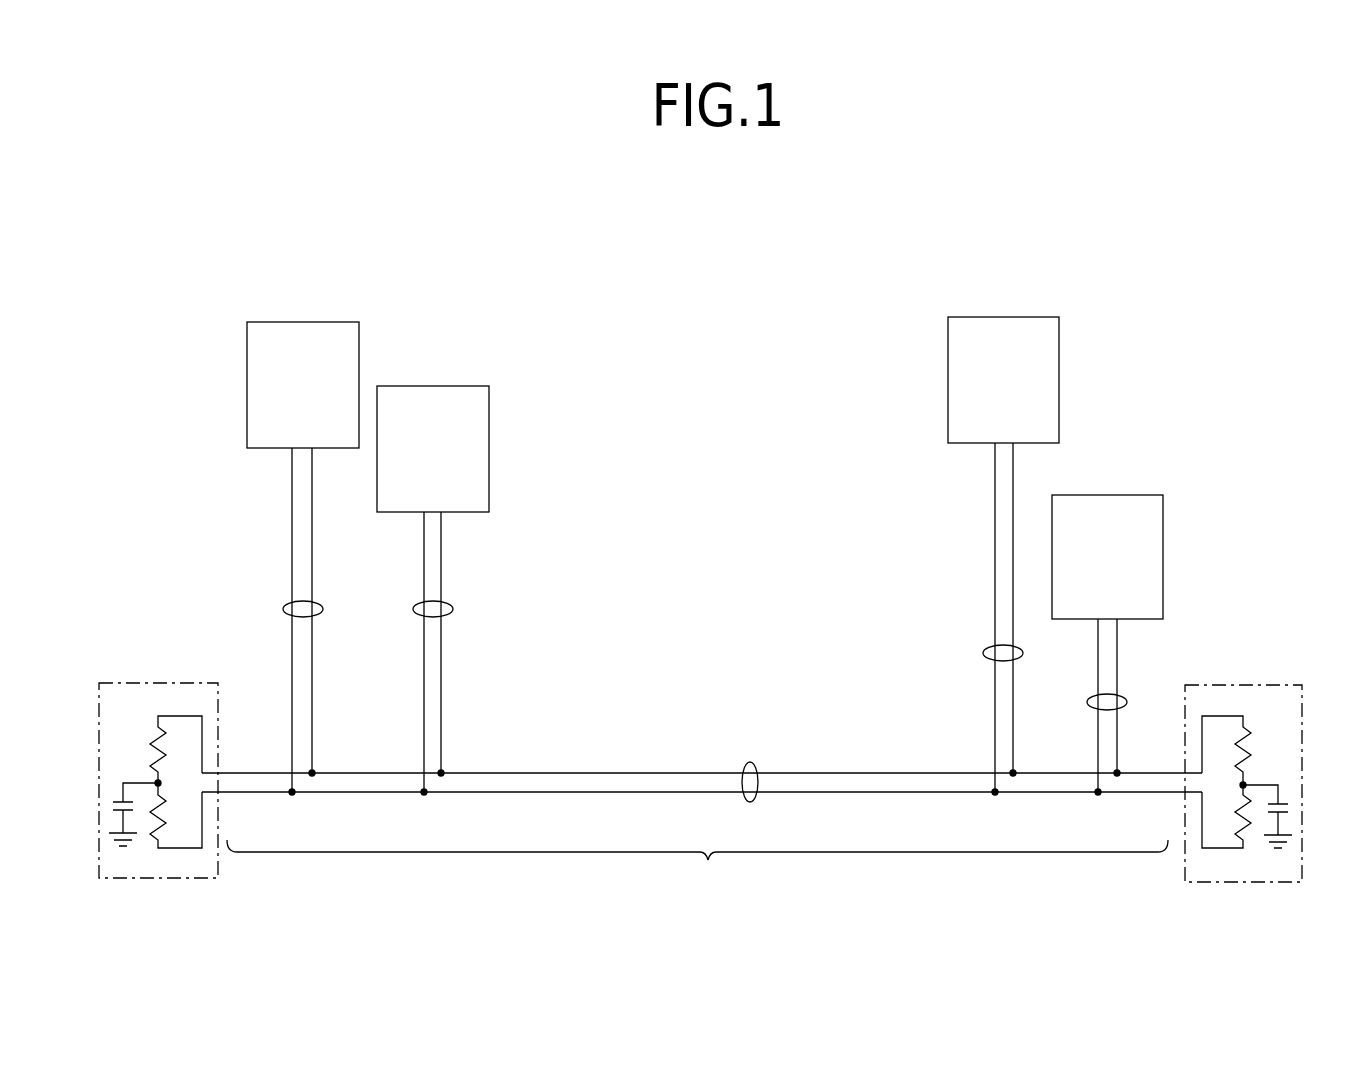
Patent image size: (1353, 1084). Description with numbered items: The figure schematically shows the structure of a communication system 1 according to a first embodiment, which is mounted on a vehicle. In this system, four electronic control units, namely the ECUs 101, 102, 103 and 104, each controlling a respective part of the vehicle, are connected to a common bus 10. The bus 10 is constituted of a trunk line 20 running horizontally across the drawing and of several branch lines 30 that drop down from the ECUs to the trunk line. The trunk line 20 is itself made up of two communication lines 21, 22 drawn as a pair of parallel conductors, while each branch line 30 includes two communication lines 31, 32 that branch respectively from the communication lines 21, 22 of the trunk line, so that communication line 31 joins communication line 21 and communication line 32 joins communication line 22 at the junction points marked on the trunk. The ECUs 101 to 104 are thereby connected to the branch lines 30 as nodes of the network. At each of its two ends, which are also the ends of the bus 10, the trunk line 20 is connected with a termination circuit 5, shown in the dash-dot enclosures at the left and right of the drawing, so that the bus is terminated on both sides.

The communication system 1 is at (1146, 285).
The termination circuit 5 is at (143, 683).
The bus 10 is at (697, 868).
The trunk line 20 is at (750, 762).
The communication line 21 is at (690, 772).
The communication line 22 is at (667, 793).
The branch line 30 is at (282, 609).
The communication line 31 is at (312, 643).
The communication line 32 is at (291, 676).
The ECU 101 is at (305, 322).
The ECU 102 is at (434, 386).
The ECU 103 is at (1007, 317).
The ECU 104 is at (1108, 495).